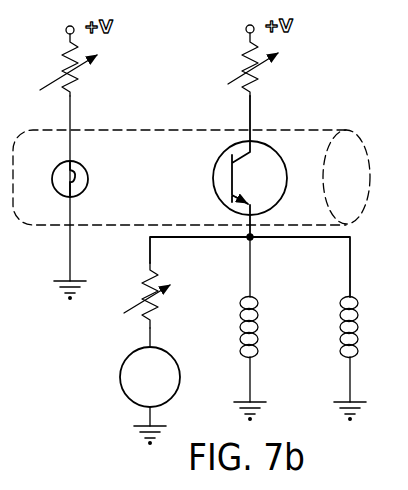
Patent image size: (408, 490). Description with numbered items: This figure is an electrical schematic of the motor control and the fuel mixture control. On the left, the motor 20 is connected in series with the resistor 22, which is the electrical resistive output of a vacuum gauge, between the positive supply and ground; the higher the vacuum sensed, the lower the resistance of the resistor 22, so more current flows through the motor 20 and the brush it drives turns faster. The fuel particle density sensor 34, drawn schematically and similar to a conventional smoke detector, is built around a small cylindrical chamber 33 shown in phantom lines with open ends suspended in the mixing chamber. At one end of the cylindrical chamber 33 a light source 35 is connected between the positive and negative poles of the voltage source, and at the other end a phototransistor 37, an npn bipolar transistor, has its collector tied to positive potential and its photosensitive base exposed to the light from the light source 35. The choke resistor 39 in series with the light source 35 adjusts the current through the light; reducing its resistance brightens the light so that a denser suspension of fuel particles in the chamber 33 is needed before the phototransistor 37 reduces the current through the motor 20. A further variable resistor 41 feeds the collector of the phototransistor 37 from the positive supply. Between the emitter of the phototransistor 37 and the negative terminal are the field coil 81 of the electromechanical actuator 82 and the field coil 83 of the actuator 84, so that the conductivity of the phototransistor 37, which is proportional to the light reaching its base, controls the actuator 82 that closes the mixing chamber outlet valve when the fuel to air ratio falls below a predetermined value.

The motor 20 is at (126, 395).
The resistor 22 is at (148, 328).
The cylindrical chamber 33 is at (330, 140).
The fuel particle density sensor 34 is at (341, 80).
The light source 35 is at (58, 192).
The phototransistor 37 is at (228, 149).
The choke resistor 39 is at (73, 88).
The variable resistor 41 is at (244, 52).
The field coil 81 is at (243, 355).
The electromechanical actuator 82 is at (222, 311).
The field coil 83 is at (345, 356).
The actuator 84 is at (322, 311).